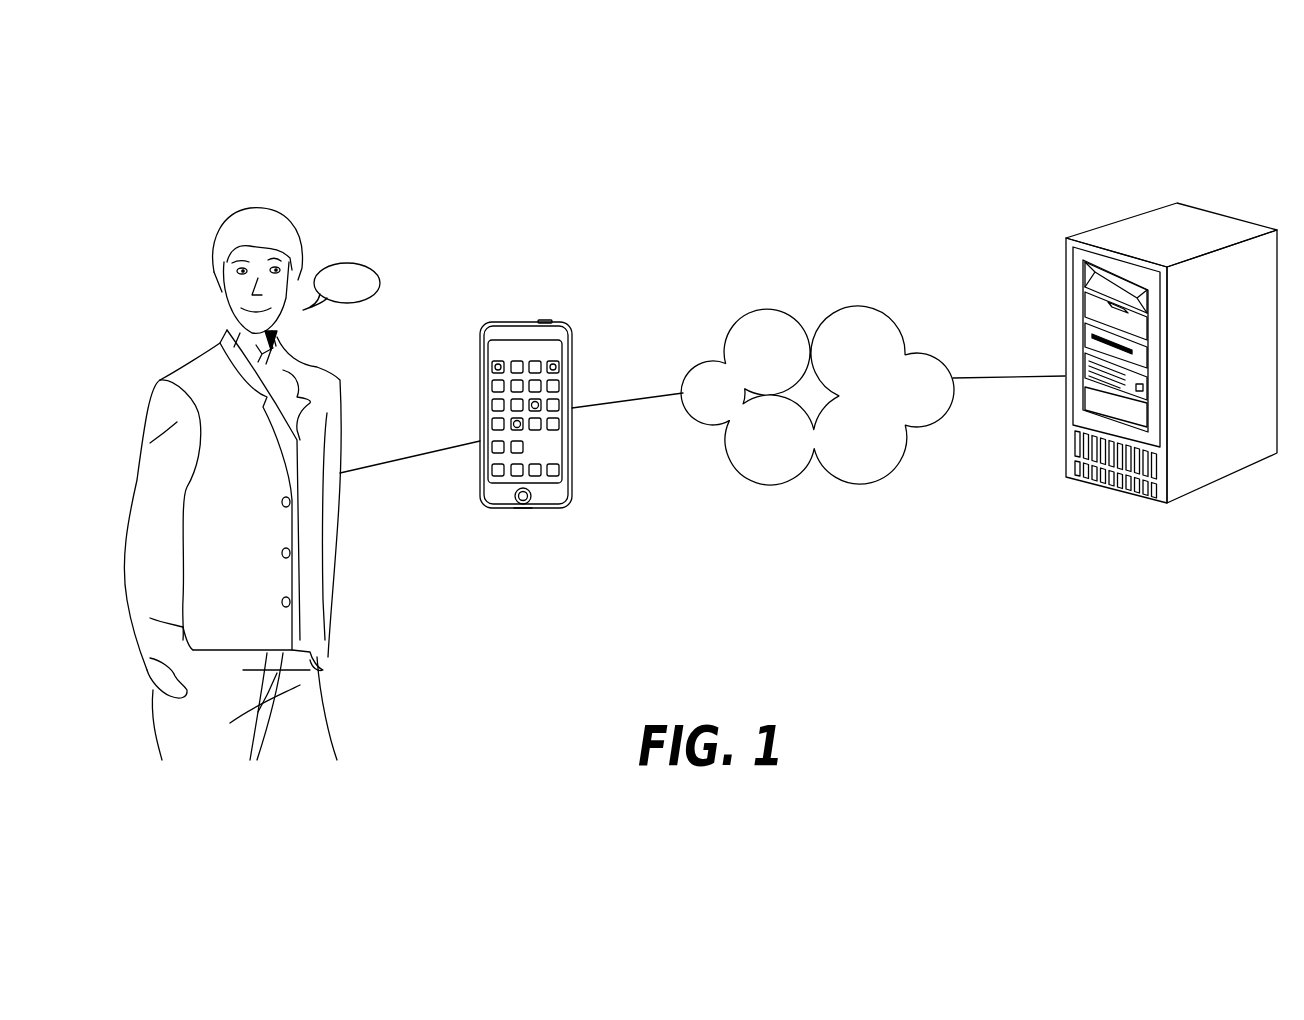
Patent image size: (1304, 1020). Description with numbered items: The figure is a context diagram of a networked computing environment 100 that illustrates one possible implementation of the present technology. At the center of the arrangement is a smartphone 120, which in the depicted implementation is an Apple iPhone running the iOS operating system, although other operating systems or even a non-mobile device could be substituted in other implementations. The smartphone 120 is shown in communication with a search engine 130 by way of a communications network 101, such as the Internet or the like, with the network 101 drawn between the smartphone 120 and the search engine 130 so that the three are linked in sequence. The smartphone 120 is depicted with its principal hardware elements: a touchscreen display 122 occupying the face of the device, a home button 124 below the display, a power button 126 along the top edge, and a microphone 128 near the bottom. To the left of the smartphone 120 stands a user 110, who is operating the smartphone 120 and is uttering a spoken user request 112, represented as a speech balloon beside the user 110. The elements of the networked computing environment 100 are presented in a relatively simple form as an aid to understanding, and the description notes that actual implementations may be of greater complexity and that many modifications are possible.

The networked computing environment 100 is at (171, 80).
The communications network 101 is at (832, 404).
The user 110 is at (291, 204).
The spoken user request 112 is at (341, 286).
The smartphone 120 is at (534, 429).
The touchscreen display 122 is at (508, 349).
The home button 124 is at (530, 505).
The power button 126 is at (545, 321).
The microphone 128 is at (524, 511).
The search engine 130 is at (1146, 191).